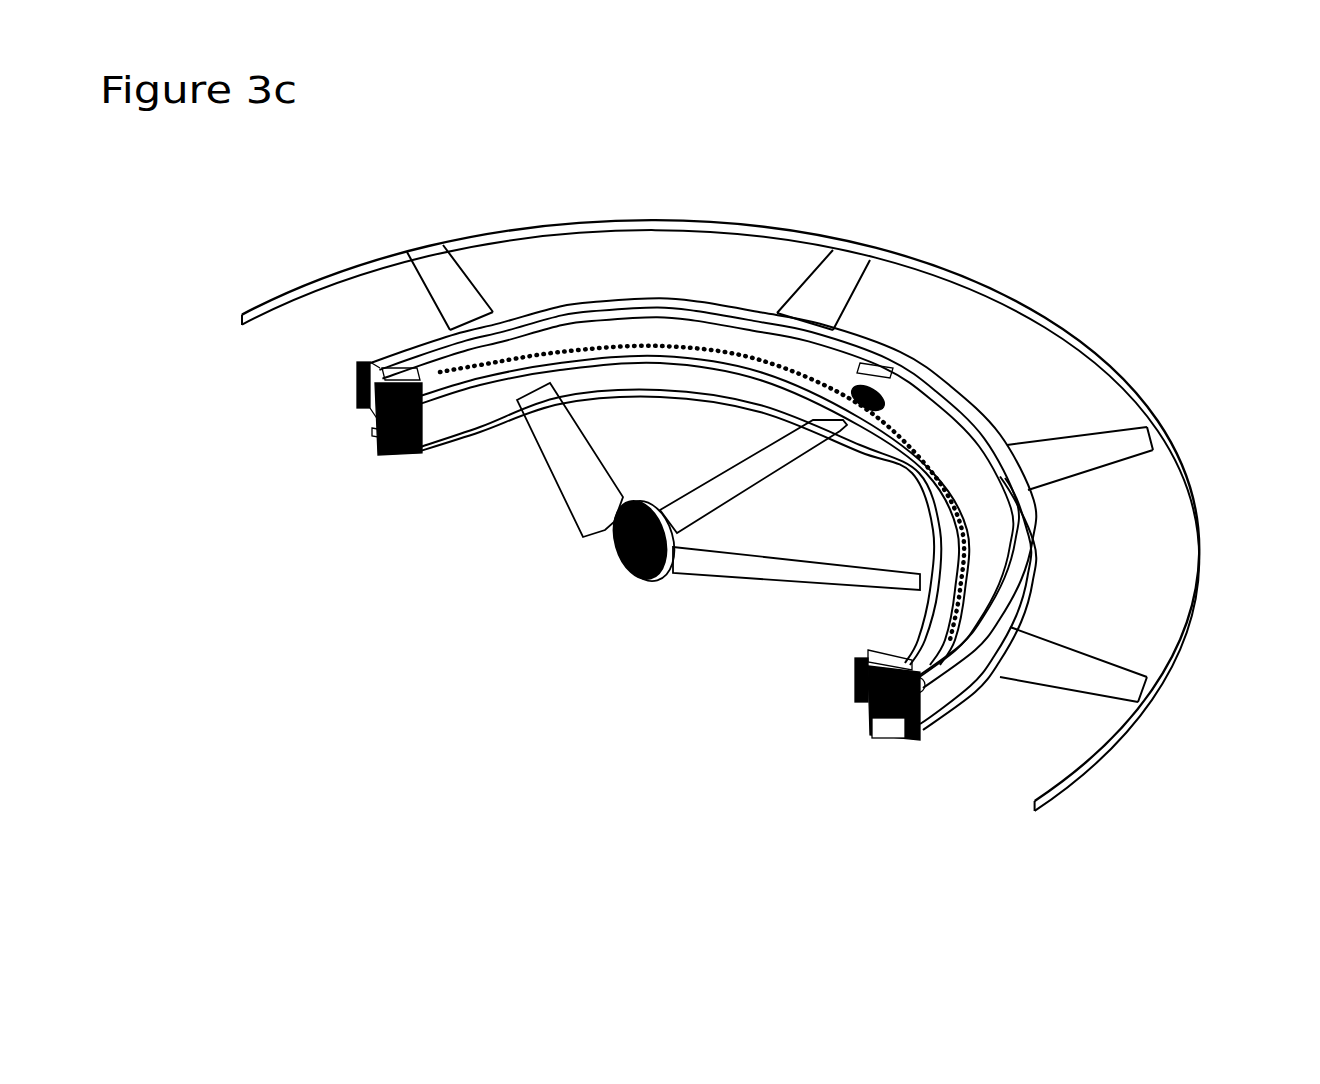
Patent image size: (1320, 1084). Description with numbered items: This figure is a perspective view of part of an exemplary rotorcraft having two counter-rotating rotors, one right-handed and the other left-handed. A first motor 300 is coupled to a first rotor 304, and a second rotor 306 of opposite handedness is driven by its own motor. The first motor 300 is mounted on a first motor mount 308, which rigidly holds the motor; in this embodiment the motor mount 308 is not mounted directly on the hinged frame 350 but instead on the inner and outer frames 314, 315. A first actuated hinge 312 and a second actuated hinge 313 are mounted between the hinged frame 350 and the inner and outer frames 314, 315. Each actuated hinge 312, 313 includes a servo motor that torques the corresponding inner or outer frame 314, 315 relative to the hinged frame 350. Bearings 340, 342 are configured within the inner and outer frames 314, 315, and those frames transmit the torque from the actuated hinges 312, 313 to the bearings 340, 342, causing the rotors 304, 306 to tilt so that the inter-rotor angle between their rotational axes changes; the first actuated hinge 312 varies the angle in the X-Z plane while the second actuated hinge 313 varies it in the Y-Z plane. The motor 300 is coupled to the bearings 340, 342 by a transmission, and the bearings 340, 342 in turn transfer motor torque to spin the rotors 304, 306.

The first motor 300 is at (862, 703).
The first rotor 304 is at (587, 495).
The second rotor 306 is at (827, 275).
The first motor mount 308 is at (900, 663).
The first actuated hinge 312 is at (377, 436).
The second actuated hinge 313 is at (885, 380).
The inner frame 314 is at (917, 448).
The outer frame 315 is at (945, 682).
The bearing 340 is at (412, 450).
The bearing 342 is at (913, 745).
The hinged frame 350 is at (662, 333).